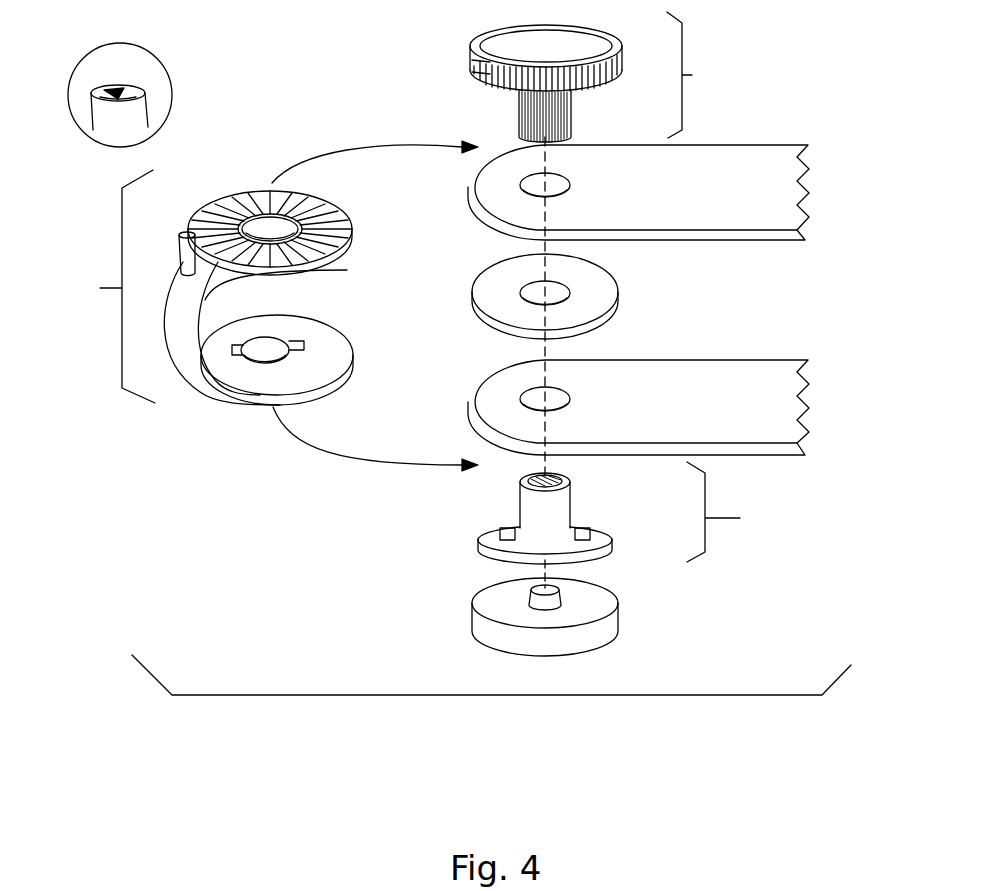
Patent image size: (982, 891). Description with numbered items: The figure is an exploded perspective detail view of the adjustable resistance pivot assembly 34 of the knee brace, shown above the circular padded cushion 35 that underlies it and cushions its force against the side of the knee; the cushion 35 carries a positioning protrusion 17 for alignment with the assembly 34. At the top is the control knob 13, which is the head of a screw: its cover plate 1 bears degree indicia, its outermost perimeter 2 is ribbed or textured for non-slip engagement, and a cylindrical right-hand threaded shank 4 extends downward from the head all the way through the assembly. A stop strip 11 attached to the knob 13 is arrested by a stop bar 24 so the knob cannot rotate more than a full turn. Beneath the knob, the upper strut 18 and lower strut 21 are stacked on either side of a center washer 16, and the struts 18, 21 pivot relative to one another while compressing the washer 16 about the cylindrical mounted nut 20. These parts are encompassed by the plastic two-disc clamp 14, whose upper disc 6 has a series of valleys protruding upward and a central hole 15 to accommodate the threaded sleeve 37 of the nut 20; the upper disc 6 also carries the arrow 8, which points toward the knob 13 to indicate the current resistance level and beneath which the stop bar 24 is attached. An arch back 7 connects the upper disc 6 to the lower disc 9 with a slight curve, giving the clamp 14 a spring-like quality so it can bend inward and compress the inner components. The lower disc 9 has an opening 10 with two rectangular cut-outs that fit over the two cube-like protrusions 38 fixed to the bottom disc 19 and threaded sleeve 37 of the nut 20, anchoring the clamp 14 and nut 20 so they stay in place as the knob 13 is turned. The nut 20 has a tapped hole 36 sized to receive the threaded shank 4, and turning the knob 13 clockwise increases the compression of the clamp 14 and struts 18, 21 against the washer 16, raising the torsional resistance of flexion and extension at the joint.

The cover plate 1 is at (497, 33).
The outermost perimeter 2 is at (517, 85).
The shank 4 is at (578, 113).
The upper disc 6 is at (243, 195).
The arch back 7 is at (180, 338).
The arrow 8 is at (184, 231).
The lower disc 9 is at (232, 398).
The opening 10 is at (265, 363).
The stop strip 11 is at (488, 72).
The control knob 13 is at (700, 75).
The clamp 14 is at (105, 286).
The hole 15 is at (550, 188).
The center washer 16 is at (497, 282).
The positioning protrusion 17 is at (548, 600).
The upper strut 18 is at (677, 175).
The bottom disc 19 is at (478, 538).
The mounted nut 20 is at (740, 512).
The lower strut 21 is at (662, 398).
The stop bar 24 is at (175, 262).
The adjustable resistance pivot assembly 34 is at (497, 695).
The circular padded cushion 35 is at (500, 613).
The tapped hole 36 is at (565, 481).
The threaded sleeve 37 is at (556, 509).
The cube-like protrusions 38 is at (505, 535).